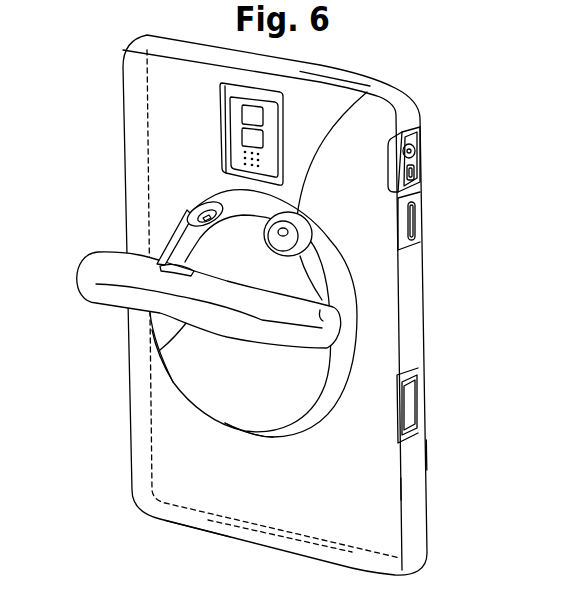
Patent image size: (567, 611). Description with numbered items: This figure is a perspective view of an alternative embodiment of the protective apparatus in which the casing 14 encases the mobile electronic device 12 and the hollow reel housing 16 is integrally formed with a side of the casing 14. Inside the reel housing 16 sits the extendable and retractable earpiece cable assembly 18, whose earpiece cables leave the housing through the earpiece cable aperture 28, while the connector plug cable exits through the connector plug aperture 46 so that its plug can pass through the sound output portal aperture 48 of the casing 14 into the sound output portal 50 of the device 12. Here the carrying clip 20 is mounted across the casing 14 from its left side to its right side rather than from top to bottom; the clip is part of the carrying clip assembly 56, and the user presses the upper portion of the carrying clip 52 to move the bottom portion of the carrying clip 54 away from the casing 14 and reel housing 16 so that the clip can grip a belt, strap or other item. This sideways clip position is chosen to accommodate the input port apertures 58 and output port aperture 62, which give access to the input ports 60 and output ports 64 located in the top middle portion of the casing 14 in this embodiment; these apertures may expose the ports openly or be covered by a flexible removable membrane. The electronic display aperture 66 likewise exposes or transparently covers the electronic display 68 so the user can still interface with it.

The carrying clip 20 is at (360, 37).
The mobile electronic device 12 is at (323, 97).
The casing 14 is at (417, 519).
The reel housing 16 is at (197, 371).
The extendable and retractable earpiece cable assembly 18 is at (213, 399).
The earpiece cable aperture 28 is at (186, 211).
The connector plug aperture 46 is at (392, 86).
The sound output portal aperture 48 is at (420, 153).
The sound output portal 50 is at (420, 139).
The upper portion of carrying clip 52 is at (93, 303).
The bottom portion of carrying clip 54 is at (357, 306).
The carrying clip assembly 56 is at (163, 243).
The input port apertures 58 is at (219, 114).
The input ports 60 is at (248, 103).
The output port apertures 62 is at (197, 532).
The output ports 64 is at (420, 172).
The electronic display aperture 66 is at (432, 457).
The electronic display 68 is at (433, 487).